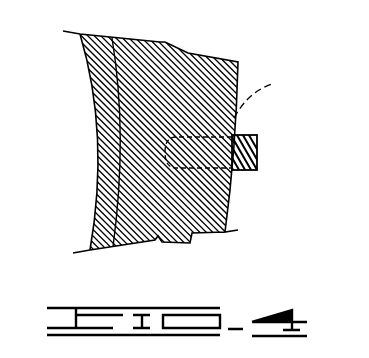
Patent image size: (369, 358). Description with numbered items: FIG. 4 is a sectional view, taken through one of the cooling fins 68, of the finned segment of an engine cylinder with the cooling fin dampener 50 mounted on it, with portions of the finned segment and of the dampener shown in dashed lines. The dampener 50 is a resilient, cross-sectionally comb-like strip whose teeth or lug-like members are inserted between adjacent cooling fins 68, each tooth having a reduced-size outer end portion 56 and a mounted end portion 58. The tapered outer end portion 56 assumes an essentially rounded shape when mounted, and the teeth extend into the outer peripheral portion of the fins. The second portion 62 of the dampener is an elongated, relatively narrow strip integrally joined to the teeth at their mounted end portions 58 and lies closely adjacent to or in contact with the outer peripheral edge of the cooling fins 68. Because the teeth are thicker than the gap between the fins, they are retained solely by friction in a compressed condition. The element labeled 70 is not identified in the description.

The cooling fin dampener 50 is at (262, 127).
The outer end portion 56 is at (165, 151).
The mounted end portion 58 is at (263, 99).
The second portion 62 is at (245, 167).
The cooling fins 68 is at (175, 69).
The outer rim layer 70 is at (110, 200).